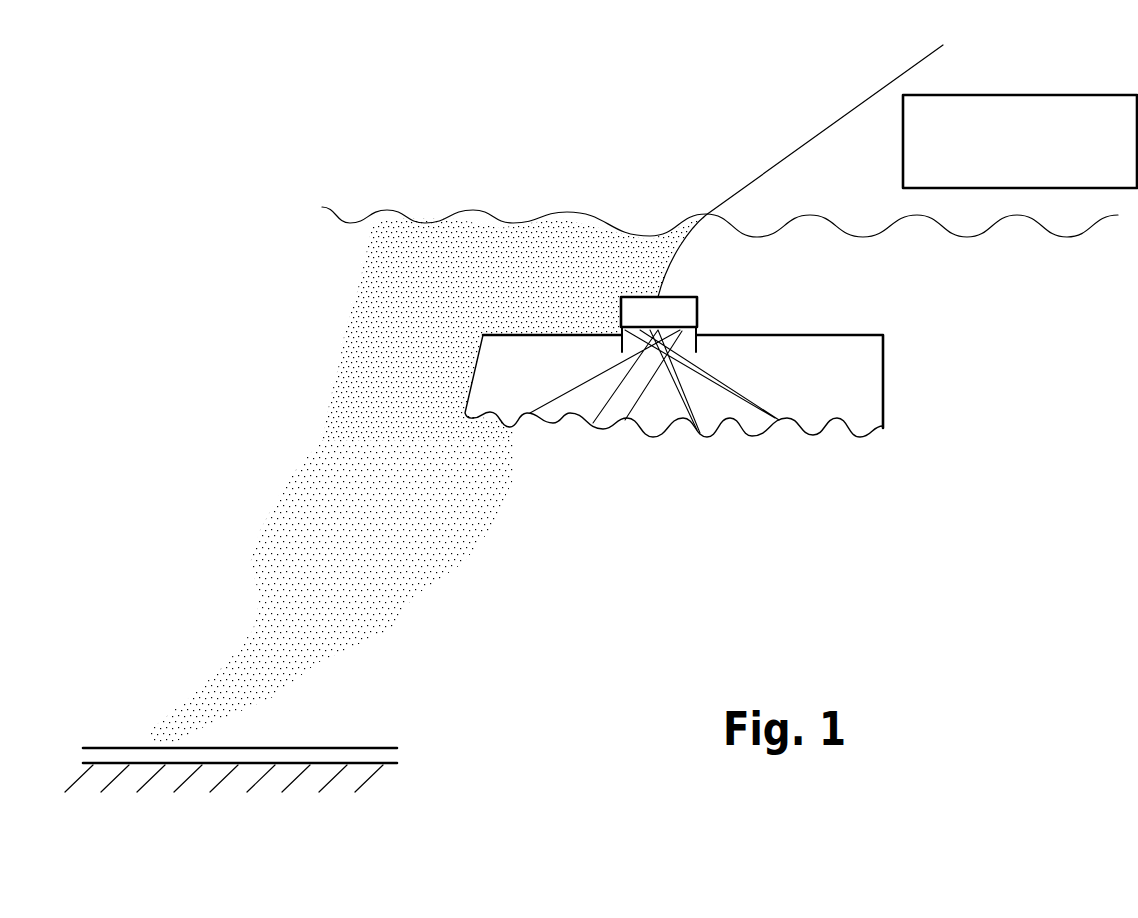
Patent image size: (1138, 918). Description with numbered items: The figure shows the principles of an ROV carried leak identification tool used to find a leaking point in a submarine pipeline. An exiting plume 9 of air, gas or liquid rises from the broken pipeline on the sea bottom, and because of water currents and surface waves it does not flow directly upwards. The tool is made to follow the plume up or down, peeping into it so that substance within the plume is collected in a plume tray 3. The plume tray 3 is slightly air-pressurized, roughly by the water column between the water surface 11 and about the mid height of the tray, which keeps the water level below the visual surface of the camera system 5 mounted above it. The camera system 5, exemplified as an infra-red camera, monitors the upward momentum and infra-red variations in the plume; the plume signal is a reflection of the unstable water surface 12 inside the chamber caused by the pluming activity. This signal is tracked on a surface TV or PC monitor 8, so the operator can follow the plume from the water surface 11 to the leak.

The plume tray 3 is at (850, 378).
The camera system 5 is at (680, 308).
The TV or PC monitor 8 is at (830, 125).
The exiting plume 9 is at (423, 548).
The water surface 11 is at (827, 215).
The unstable water surface 12 is at (750, 433).